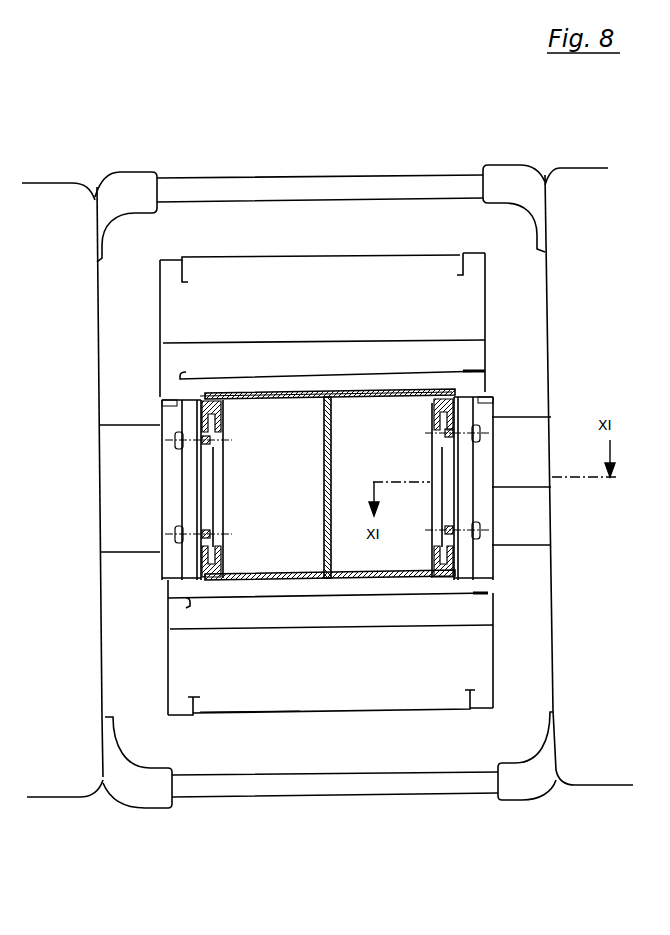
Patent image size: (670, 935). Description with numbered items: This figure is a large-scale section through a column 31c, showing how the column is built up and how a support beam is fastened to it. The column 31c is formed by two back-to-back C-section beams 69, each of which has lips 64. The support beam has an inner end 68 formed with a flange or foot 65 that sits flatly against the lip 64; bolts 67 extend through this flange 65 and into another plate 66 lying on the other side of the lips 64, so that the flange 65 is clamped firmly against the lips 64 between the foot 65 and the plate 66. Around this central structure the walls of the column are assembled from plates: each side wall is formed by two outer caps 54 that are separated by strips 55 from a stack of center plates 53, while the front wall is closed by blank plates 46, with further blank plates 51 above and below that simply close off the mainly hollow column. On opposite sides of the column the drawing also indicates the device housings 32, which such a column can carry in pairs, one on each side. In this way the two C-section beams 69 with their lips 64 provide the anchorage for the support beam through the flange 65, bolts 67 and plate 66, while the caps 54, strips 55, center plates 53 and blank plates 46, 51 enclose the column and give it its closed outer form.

The column 31c is at (405, 717).
The housing 32 is at (80, 803).
The blank plate 46 is at (268, 718).
The blank plate 51 is at (247, 255).
The center plate 53 is at (551, 487).
The outer cap 54 is at (468, 360).
The strip 55 is at (487, 381).
The lip 64 is at (200, 413).
The flange 65 is at (195, 470).
The plate 66 is at (218, 493).
The bolt 67 is at (207, 440).
The inner end 68 is at (123, 537).
The C-section beam 69 is at (272, 580).